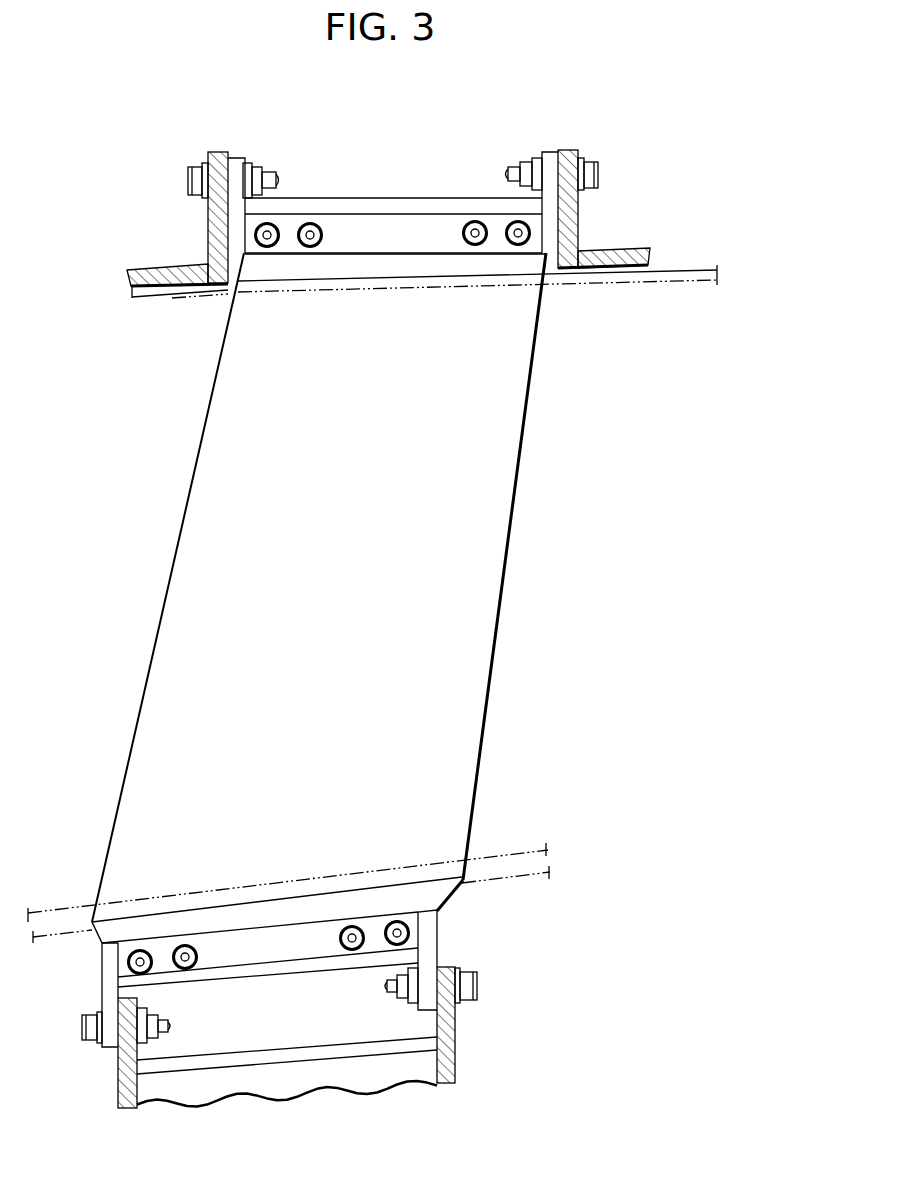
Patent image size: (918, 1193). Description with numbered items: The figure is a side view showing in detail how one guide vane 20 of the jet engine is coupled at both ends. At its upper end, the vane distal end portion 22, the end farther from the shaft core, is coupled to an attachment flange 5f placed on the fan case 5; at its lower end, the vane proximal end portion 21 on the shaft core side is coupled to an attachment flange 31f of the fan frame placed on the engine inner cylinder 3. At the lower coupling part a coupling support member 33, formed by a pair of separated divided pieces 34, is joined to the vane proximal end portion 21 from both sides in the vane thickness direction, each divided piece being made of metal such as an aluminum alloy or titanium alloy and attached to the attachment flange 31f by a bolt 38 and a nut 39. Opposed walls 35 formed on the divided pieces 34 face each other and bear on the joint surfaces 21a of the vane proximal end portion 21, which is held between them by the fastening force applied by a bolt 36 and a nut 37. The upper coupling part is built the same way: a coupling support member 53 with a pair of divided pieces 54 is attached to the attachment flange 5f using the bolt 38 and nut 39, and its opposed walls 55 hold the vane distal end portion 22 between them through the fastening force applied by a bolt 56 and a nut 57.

The engine inner cylinder 3 is at (255, 886).
The fan case 5 is at (688, 266).
The attachment flange 5f is at (222, 152).
The guide vane 20 is at (500, 504).
The vane proximal end portion 21 is at (467, 884).
The joint surface 21a is at (312, 907).
The vane distal end portion 22 is at (413, 262).
The attachment flange 31f is at (118, 1080).
The coupling support member 33 is at (100, 996).
The divided piece 34 is at (200, 986).
The opposed wall 35 is at (219, 950).
The bolt 36 is at (129, 968).
The nut 37 is at (129, 962).
The bolt 38 is at (188, 178).
The nut 39 is at (258, 166).
The coupling support member 53 is at (235, 230).
The divided piece 54 is at (292, 208).
The opposed wall 55 is at (360, 242).
The bolt 56 is at (302, 248).
The nut 57 is at (315, 227).